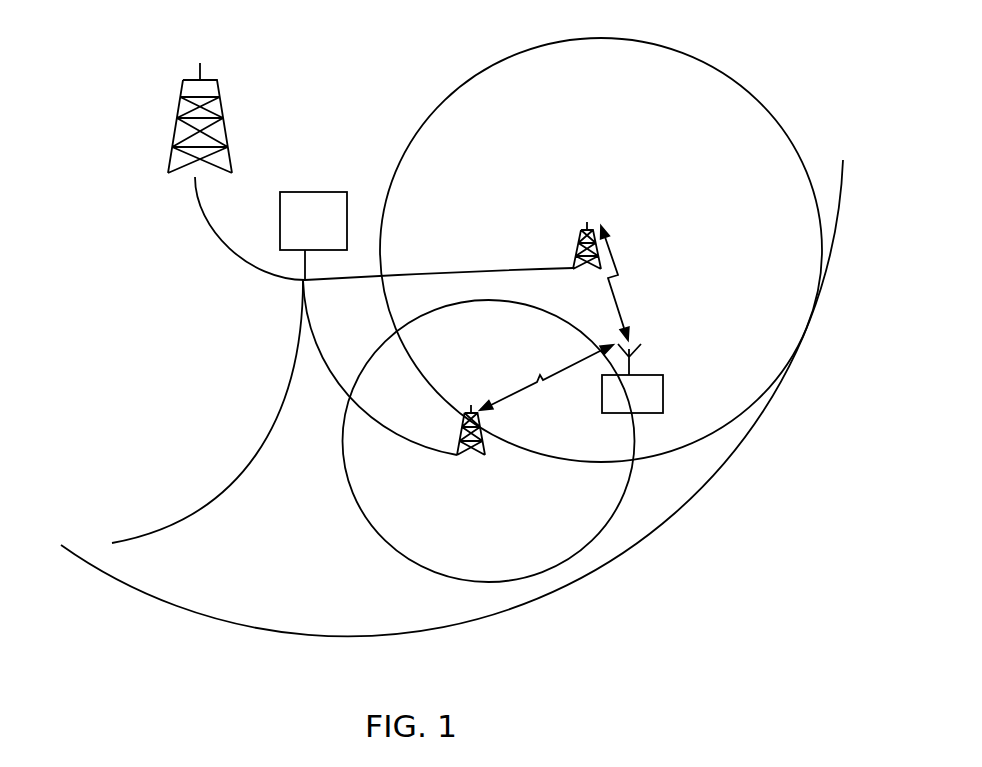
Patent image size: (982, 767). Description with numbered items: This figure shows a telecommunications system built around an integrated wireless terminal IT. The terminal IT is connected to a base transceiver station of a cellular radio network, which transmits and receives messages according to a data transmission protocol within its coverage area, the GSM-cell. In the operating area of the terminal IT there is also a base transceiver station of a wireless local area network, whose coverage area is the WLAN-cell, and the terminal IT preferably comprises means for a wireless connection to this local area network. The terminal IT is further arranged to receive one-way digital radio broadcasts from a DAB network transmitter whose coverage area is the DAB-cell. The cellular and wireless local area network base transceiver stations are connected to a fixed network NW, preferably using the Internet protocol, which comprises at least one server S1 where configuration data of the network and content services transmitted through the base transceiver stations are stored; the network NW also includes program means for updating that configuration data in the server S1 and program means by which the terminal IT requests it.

The server S1 is at (313, 236).
The fixed network NW is at (273, 413).
The GSM cell GSM-cell is at (448, 140).
The WLAN cell WLAN-cell is at (417, 550).
The integrated wireless terminal IT is at (571, 319).
The DAB cell DAB-cell is at (463, 605).